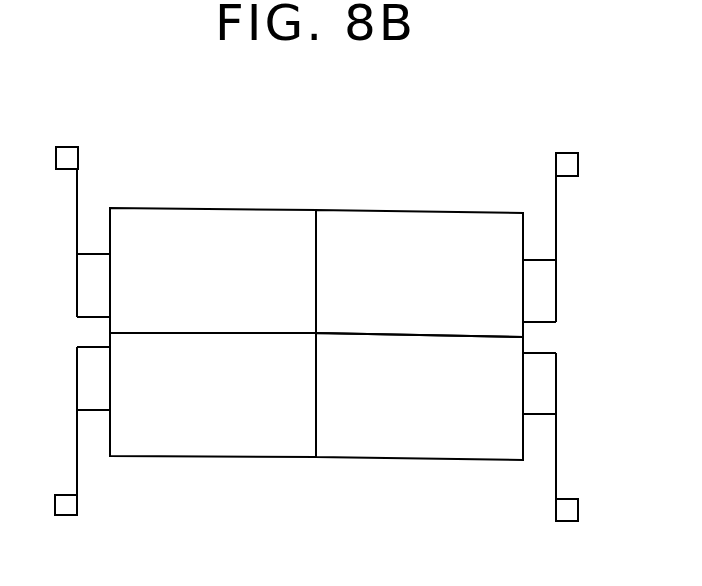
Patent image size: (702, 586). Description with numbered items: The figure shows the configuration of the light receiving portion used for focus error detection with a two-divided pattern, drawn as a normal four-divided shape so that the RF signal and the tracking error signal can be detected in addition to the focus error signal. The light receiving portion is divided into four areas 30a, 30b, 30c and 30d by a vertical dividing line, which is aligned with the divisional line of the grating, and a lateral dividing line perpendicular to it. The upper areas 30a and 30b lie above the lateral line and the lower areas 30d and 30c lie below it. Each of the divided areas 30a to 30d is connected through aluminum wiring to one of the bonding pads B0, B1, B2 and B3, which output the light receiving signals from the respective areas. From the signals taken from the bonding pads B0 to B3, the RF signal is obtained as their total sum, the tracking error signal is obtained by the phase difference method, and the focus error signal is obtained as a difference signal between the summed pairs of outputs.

The divided area 30a is at (220, 209).
The divided area 30b is at (424, 212).
The divided area 30c is at (424, 461).
The divided area 30d is at (220, 458).
The bonding pad B0 is at (67, 147).
The bonding pad B1 is at (567, 153).
The bonding pad B2 is at (565, 522).
The bonding pad B3 is at (64, 516).